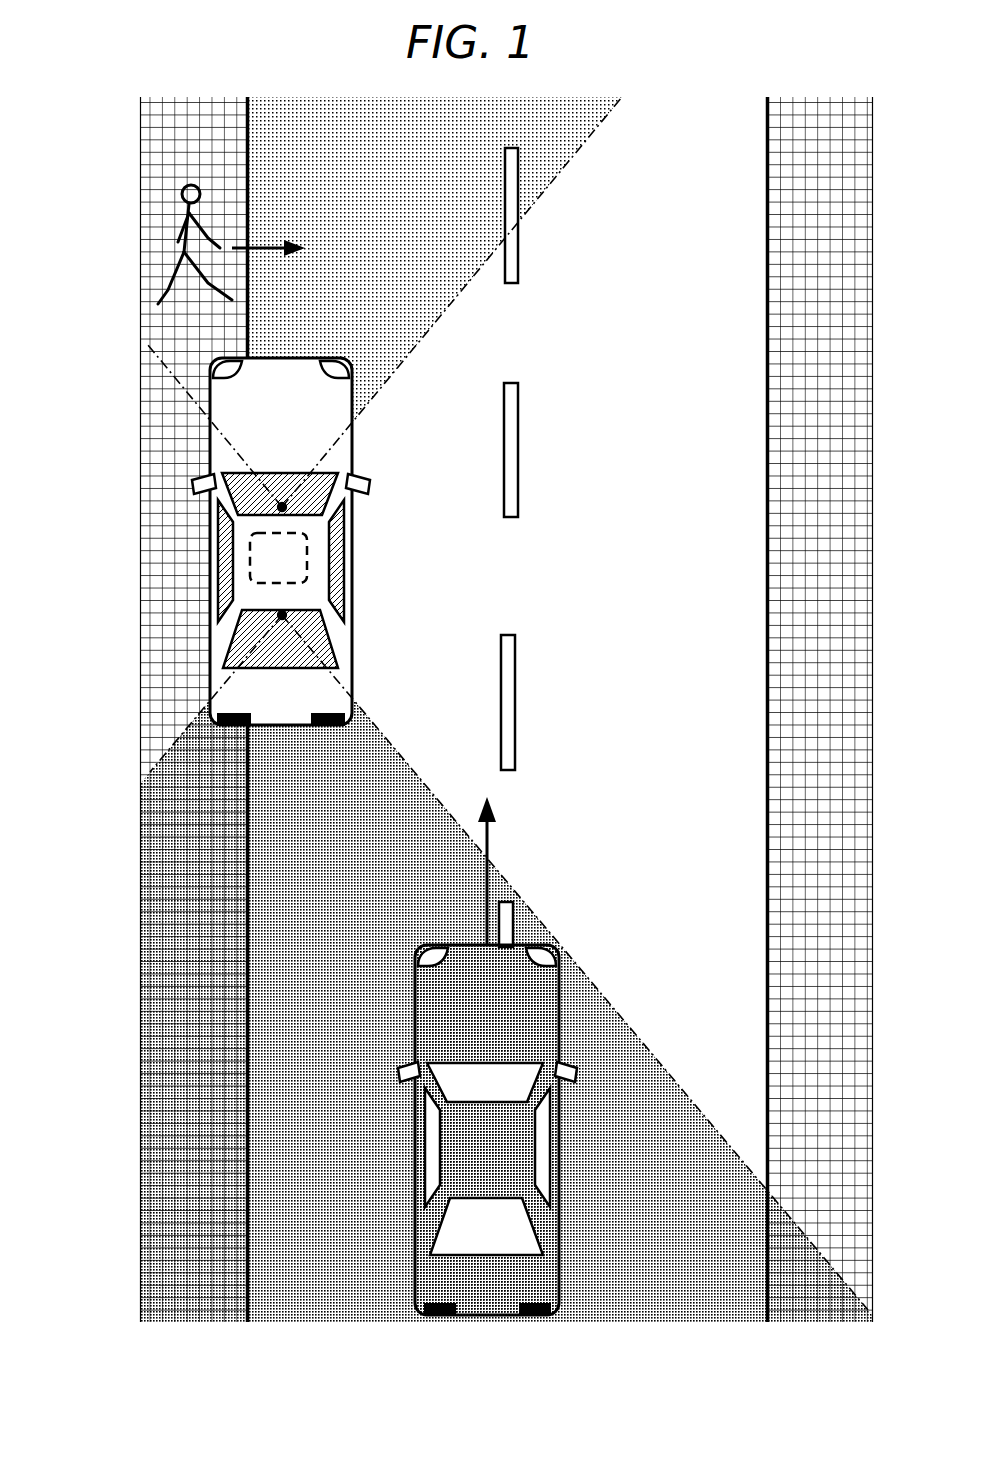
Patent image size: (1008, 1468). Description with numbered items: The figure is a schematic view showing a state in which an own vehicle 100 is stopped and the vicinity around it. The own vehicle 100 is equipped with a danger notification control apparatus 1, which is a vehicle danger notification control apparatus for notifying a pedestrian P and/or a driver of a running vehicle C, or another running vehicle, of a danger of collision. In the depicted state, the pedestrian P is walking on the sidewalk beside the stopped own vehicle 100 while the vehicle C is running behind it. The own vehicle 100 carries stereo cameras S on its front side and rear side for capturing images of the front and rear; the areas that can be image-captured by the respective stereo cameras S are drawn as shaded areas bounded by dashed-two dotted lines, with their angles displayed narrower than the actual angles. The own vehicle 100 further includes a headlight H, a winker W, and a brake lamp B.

The own vehicle 100 is at (210, 452).
The danger notification control apparatus 1 is at (250, 555).
The stereo camera S is at (282, 505).
The winker W is at (216, 372).
The headlight H is at (338, 356).
The brake lamp B is at (238, 727).
The pedestrian P is at (175, 228).
The vehicle C is at (543, 983).